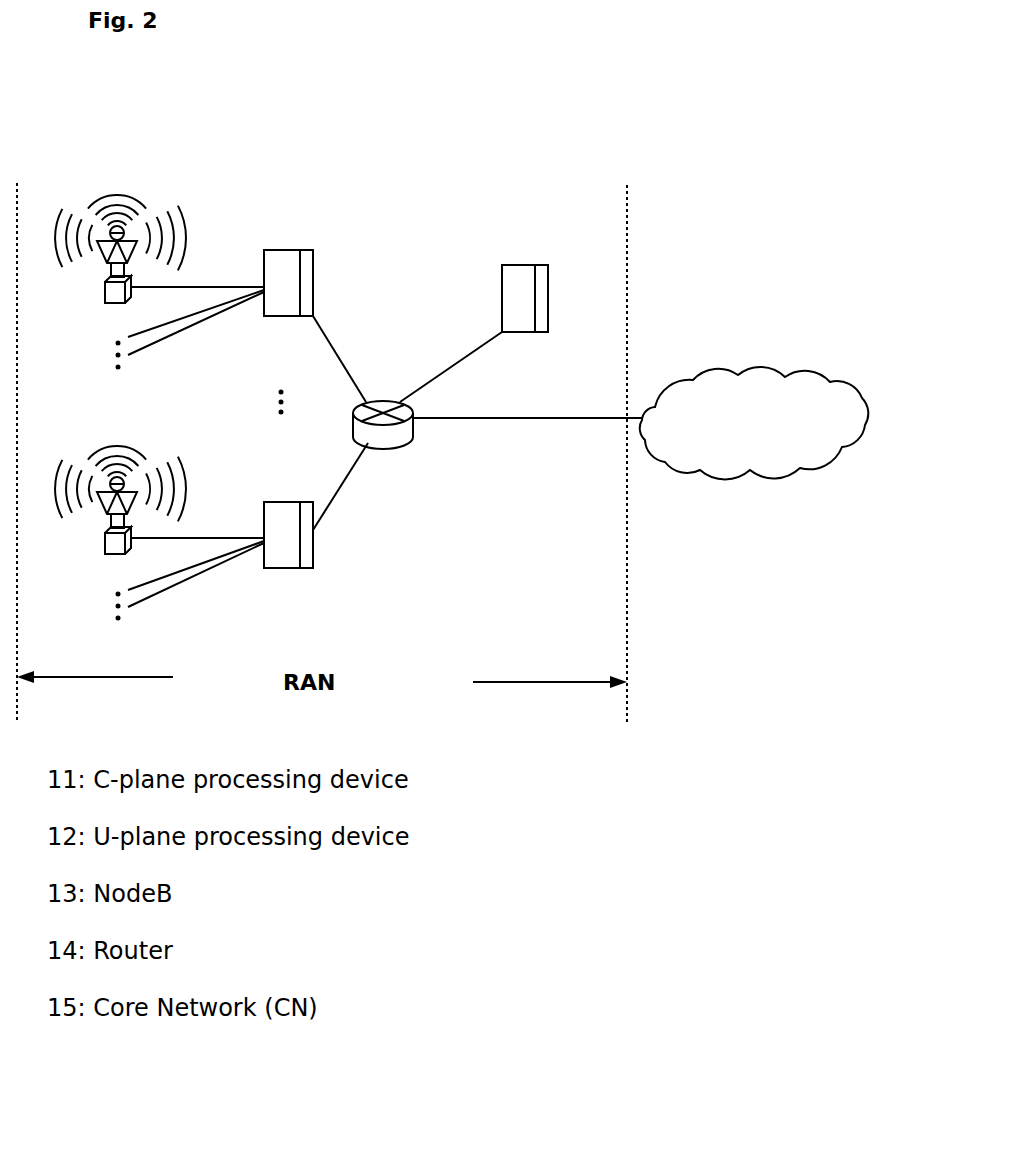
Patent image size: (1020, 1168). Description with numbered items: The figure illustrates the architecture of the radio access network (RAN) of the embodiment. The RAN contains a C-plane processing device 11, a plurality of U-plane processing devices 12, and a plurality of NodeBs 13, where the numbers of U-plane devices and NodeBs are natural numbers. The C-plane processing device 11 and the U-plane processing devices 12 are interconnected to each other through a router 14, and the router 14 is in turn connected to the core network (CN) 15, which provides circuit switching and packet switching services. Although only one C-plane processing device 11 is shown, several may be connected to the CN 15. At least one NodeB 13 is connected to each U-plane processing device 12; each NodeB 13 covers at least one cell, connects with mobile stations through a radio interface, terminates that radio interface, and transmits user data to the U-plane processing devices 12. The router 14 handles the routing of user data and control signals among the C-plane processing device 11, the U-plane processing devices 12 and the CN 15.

The C-plane processing device 11 is at (536, 265).
The U-plane processing device 12 is at (338, 586).
The NodeB 13 is at (105, 546).
The router 14 is at (412, 440).
The core network (CN) 15 is at (748, 372).